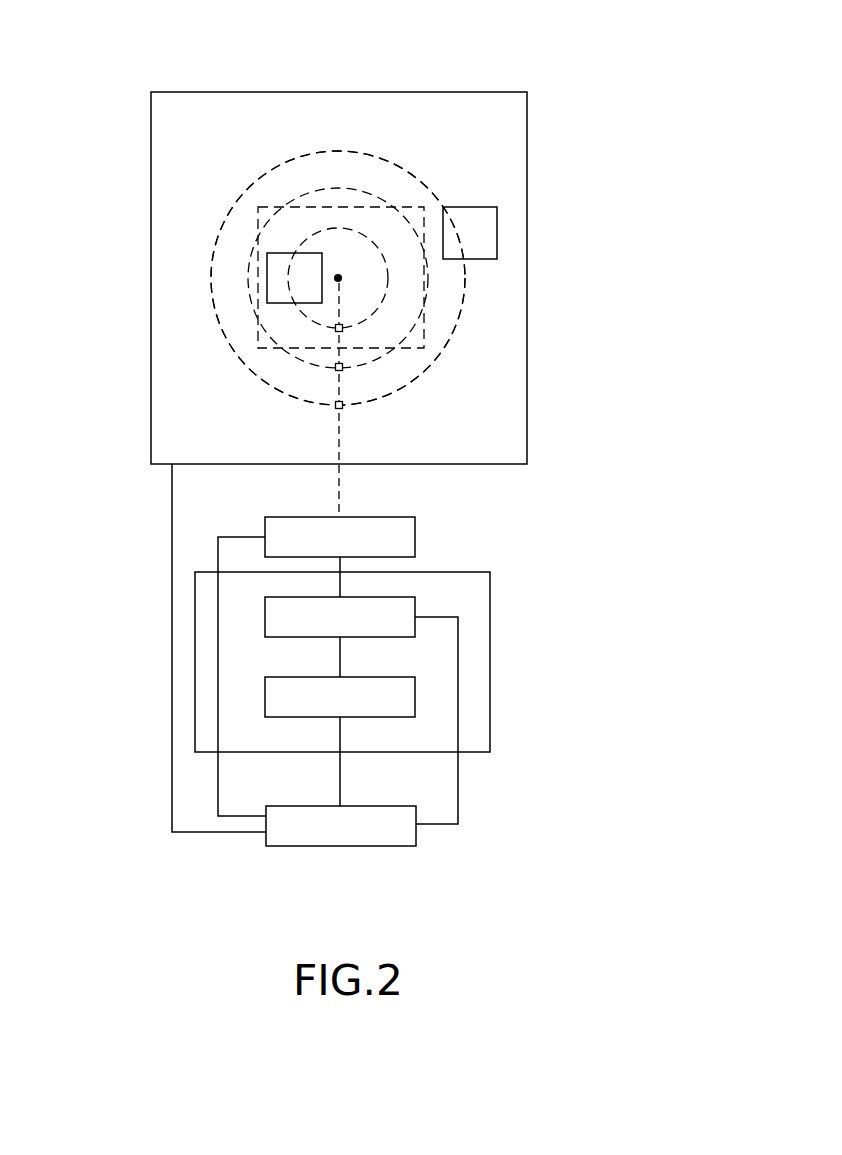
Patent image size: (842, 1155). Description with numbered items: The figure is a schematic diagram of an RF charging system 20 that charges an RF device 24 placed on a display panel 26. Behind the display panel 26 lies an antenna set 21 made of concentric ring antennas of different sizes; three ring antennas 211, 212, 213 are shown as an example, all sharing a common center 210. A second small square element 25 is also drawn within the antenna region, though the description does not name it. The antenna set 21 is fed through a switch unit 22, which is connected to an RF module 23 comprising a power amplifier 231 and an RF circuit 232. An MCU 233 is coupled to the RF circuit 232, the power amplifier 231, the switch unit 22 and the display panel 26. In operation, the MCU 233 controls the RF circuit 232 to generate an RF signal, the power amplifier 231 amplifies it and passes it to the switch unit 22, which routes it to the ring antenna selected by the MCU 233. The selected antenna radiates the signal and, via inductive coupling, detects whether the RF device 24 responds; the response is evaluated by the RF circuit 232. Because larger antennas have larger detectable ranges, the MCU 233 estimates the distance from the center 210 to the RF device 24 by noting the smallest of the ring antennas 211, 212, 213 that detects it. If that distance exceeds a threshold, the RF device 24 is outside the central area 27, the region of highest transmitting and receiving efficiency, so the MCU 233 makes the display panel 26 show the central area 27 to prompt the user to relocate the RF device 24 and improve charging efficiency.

The RF charging system 20 is at (143, 642).
The antenna set 21 is at (240, 326).
The switch unit 22 is at (415, 528).
The RF module 23 is at (490, 652).
The RF device 24 is at (443, 207).
The sensing element 25 is at (267, 277).
The display panel 26 is at (527, 147).
The central area 27 is at (422, 207).
The center 210 is at (338, 278).
The ring antenna 211 is at (384, 305).
The ring antenna 212 is at (425, 300).
The ring antenna 213 is at (463, 302).
The power amplifier 231 is at (415, 597).
The RF circuit 232 is at (378, 677).
The MCU 233 is at (370, 806).